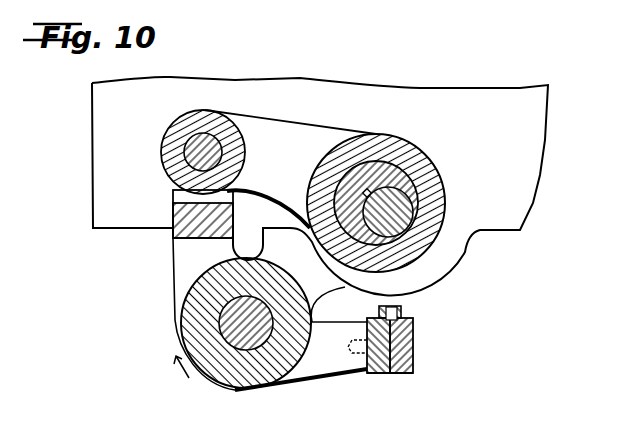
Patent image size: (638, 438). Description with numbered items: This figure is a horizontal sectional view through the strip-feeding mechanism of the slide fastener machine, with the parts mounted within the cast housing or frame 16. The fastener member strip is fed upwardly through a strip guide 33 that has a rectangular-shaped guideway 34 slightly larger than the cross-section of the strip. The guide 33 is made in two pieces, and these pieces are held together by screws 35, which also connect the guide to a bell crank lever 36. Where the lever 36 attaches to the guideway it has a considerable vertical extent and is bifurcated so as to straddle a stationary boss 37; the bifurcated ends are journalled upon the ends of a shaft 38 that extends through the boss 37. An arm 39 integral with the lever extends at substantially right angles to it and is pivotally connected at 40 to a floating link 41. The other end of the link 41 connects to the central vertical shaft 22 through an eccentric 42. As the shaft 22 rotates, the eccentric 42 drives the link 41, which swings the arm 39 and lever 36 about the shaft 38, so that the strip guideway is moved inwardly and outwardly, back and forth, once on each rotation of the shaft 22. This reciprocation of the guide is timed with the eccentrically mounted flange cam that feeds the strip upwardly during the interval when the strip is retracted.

The cast housing or frame 16 is at (110, 193).
The central vertical shaft 22 is at (437, 167).
The strip guide 33 is at (393, 373).
The guideway 34 is at (402, 310).
The screws 35 is at (413, 348).
The bell crank lever 36 is at (330, 363).
The stationary boss 37 is at (297, 257).
The shaft 38 is at (213, 382).
The arm 39 is at (190, 255).
The pivotal connection 40 is at (187, 147).
The floating link 41 is at (282, 130).
The eccentric 42 is at (382, 170).